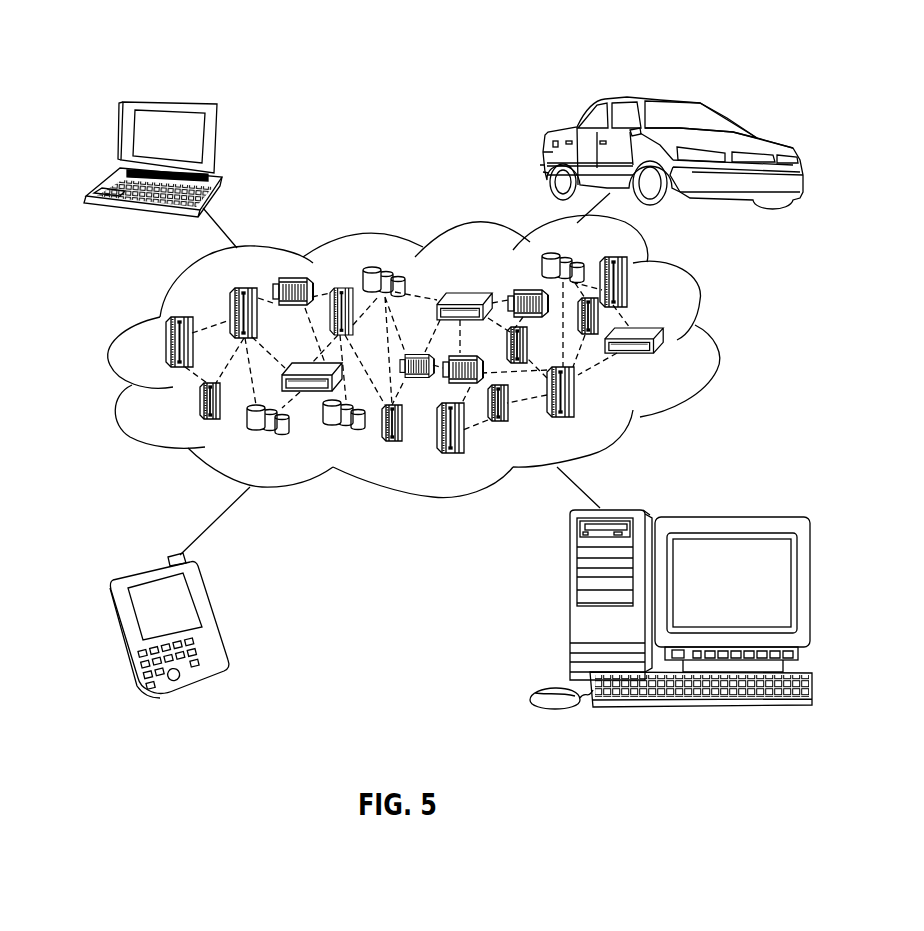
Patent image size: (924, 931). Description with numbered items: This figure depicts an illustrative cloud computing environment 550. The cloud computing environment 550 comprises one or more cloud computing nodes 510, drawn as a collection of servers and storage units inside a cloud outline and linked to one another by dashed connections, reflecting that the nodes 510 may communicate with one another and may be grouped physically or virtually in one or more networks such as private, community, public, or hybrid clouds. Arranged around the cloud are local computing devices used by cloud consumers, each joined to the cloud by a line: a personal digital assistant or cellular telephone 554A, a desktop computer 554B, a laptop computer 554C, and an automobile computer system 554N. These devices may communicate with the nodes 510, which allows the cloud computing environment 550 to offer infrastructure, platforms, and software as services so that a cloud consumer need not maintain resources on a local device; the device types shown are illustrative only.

The cloud computing nodes 510 is at (683, 362).
The cloud computing environment 550 is at (702, 310).
The personal digital assistant (PDA) or cellular telephone 554A is at (210, 607).
The desktop computer 554B is at (569, 600).
The laptop computer 554C is at (218, 140).
The automobile computer system 554N is at (548, 143).